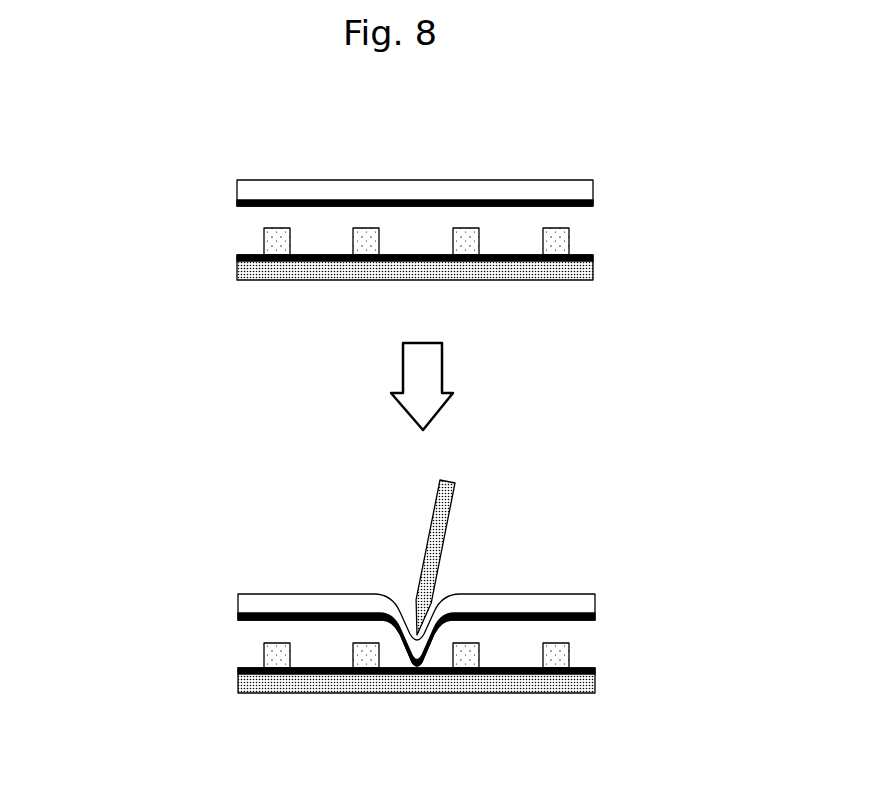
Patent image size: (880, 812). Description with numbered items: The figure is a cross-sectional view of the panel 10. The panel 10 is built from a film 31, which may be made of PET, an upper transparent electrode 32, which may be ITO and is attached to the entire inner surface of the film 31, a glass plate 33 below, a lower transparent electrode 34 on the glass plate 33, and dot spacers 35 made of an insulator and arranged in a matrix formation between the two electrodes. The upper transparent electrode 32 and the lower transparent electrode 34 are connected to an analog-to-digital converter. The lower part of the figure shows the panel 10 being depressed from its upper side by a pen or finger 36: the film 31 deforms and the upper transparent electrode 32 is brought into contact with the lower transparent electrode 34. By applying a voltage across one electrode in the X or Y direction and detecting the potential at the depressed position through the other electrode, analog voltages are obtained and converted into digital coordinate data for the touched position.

The panel 10 is at (384, 226).
The film 31 is at (254, 188).
The upper transparent electrode 32 is at (224, 206).
The glass plate 33 is at (272, 283).
The lower transparent electrode 34 is at (223, 258).
The dot spacers 35 is at (349, 220).
The pen or finger 36 is at (448, 542).